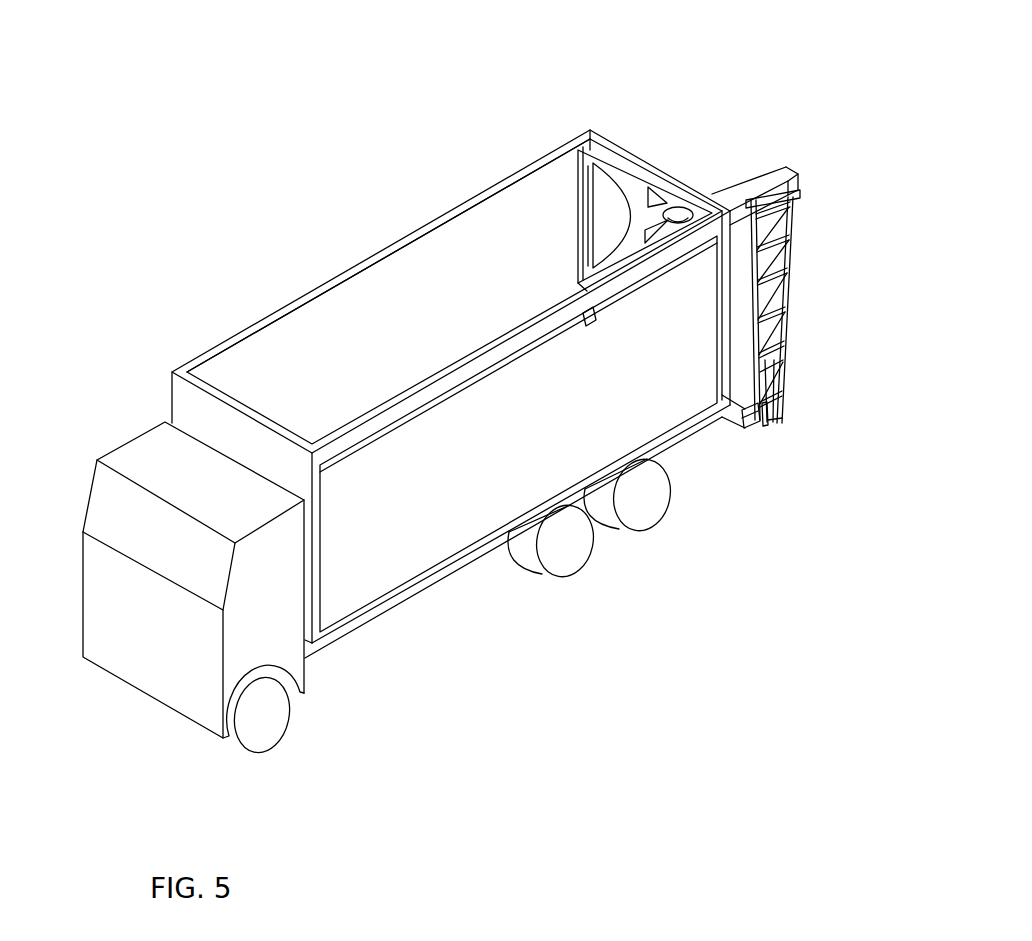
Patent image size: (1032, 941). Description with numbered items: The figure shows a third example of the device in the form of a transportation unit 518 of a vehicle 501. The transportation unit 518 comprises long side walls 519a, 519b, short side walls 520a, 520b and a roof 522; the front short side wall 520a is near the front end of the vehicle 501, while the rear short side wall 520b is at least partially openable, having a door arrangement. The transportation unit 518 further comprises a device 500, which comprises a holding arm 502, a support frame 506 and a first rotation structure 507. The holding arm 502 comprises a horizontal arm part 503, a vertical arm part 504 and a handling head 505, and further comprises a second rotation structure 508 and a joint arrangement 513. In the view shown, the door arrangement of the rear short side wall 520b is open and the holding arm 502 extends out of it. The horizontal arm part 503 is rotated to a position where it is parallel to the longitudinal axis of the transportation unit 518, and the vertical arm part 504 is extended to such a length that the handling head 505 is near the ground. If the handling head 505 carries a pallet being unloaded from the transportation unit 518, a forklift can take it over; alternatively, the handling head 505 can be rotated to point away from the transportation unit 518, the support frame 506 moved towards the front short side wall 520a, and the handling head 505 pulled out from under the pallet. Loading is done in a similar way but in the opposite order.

The device 500 is at (640, 190).
The vehicle 501 is at (150, 452).
The holding arm 502 is at (796, 308).
The horizontal arm part 503 is at (757, 182).
The vertical arm part 504 is at (792, 352).
The handling head 505 is at (733, 431).
The support frame 506 is at (583, 210).
The first rotation structure 507 is at (683, 213).
The second rotation structure 508 is at (798, 194).
The joint arrangement 513 is at (776, 432).
The transportation unit 518 is at (322, 288).
The long side wall 519a is at (415, 230).
The long side wall 519b is at (403, 412).
The front short side wall 520a is at (208, 378).
The rear short side wall 520b is at (622, 145).
The roof 522 is at (414, 290).